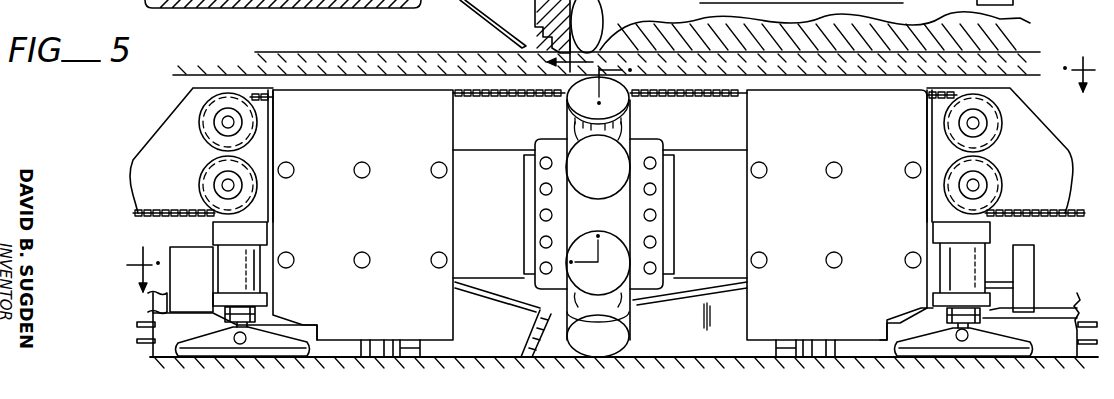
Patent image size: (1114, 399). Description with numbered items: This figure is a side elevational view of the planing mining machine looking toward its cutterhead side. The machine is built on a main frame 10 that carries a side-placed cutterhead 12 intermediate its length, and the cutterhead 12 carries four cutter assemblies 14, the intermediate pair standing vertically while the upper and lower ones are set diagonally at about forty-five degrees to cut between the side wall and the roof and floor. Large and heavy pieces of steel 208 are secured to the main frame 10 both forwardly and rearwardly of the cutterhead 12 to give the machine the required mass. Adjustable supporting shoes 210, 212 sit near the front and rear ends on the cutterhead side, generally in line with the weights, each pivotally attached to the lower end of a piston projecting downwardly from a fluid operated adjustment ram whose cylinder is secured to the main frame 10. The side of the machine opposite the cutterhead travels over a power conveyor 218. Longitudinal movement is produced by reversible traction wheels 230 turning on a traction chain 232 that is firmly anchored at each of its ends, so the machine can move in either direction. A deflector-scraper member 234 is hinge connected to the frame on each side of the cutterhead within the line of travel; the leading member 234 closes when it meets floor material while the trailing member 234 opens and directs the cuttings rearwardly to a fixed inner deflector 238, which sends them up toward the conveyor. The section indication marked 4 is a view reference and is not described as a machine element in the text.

The section line 4- 4 is at (612, 176).
The main frame 10 is at (713, 267).
The cutterhead 12 is at (652, 146).
The cutter assemblies 14 is at (631, 100).
The pieces of steel 208 is at (381, 141).
The adjustable supporting shoe 210 is at (262, 342).
The adjustable supporting shoe 212 is at (990, 342).
The power conveyor 218 is at (1093, 322).
The traction wheels 230 is at (212, 172).
The traction chain 232 is at (163, 210).
The deflector-scraper member 234 is at (502, 327).
The fixed inner deflector 238 is at (332, 352).